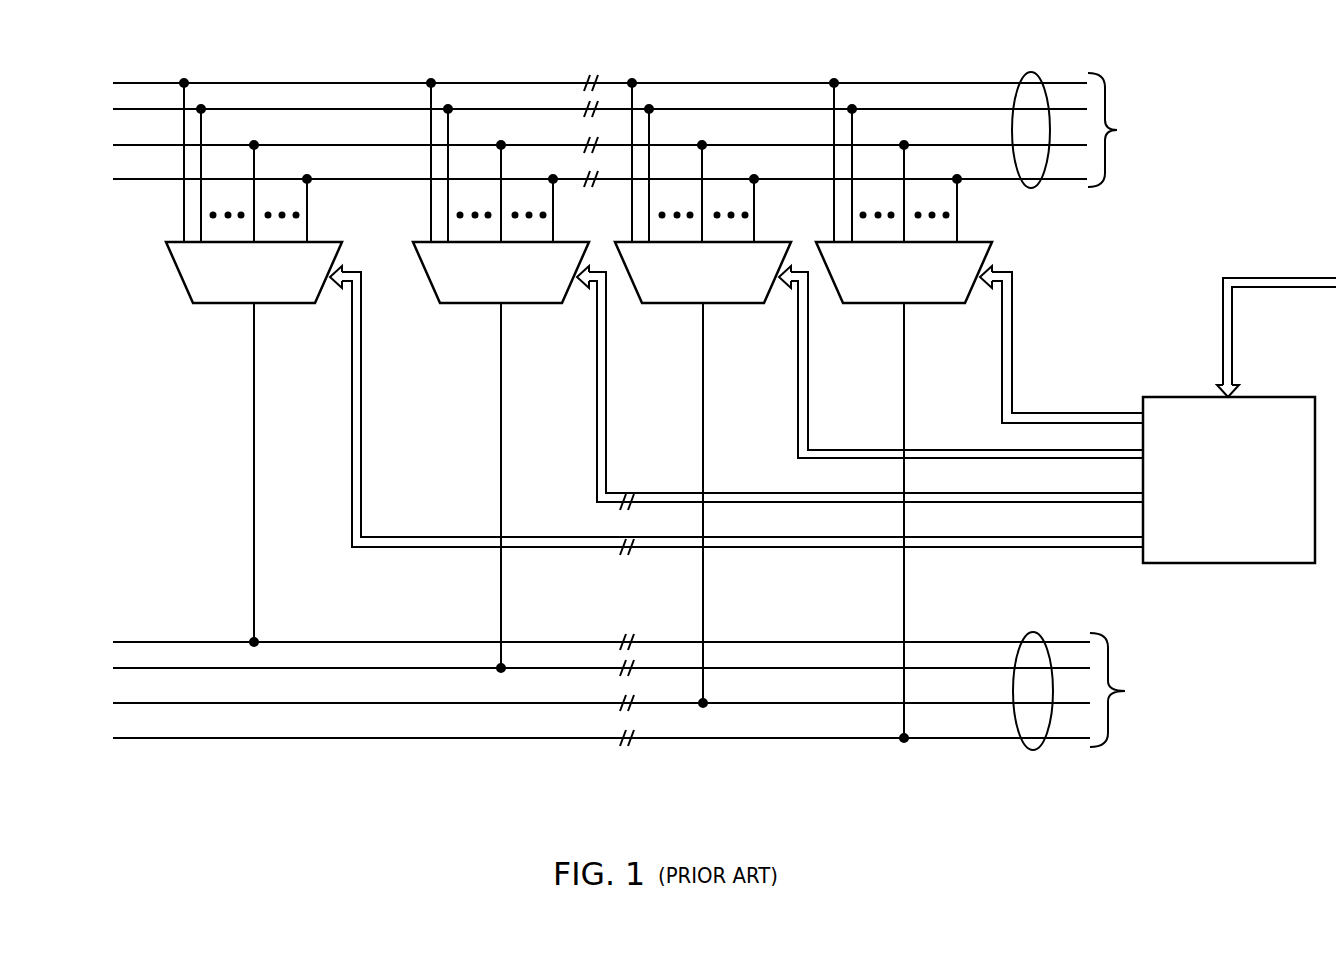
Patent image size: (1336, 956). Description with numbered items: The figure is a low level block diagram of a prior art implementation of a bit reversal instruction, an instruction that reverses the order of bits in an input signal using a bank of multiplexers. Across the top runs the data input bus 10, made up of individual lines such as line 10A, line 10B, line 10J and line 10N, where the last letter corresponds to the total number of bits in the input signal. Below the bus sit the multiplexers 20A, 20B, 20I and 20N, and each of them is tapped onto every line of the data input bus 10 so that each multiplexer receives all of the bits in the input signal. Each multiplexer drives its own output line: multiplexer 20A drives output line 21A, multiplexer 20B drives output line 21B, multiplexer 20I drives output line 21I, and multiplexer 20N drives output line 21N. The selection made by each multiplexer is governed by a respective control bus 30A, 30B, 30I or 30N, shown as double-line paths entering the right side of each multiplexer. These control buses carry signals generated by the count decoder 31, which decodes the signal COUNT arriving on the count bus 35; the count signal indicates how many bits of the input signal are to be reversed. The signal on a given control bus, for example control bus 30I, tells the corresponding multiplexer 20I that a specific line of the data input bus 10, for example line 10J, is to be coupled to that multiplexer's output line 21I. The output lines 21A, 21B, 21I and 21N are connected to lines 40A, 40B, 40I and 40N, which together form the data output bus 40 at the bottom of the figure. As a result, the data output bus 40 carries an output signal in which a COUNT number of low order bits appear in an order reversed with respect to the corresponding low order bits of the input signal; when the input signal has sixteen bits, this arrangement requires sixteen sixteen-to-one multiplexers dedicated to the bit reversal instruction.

The data input bus 10 is at (1030, 72).
The data input bus line 10A is at (336, 84).
The data input bus line 10B is at (337, 110).
The data input bus line 10J is at (345, 146).
The data input bus line 10N is at (355, 180).
The multiplexer 20A is at (208, 303).
The multiplexer 20B is at (458, 303).
The multiplexer 20I is at (659, 303).
The multiplexer 20N is at (860, 303).
The output line 21A is at (253, 399).
The output line 21B is at (500, 399).
The output line 21I is at (702, 399).
The output line 21N is at (905, 399).
The control bus 30A is at (420, 536).
The control bus 30B is at (738, 492).
The control bus 30I is at (843, 448).
The control bus 30N is at (1013, 335).
The count decoder 31 is at (1240, 516).
The count bus 35 is at (1283, 288).
The data output bus 40 is at (1034, 632).
The data output bus line 40A is at (340, 642).
The data output bus line 40B is at (340, 669).
The data output bus line 40I is at (350, 704).
The data output bus line 40N is at (358, 739).